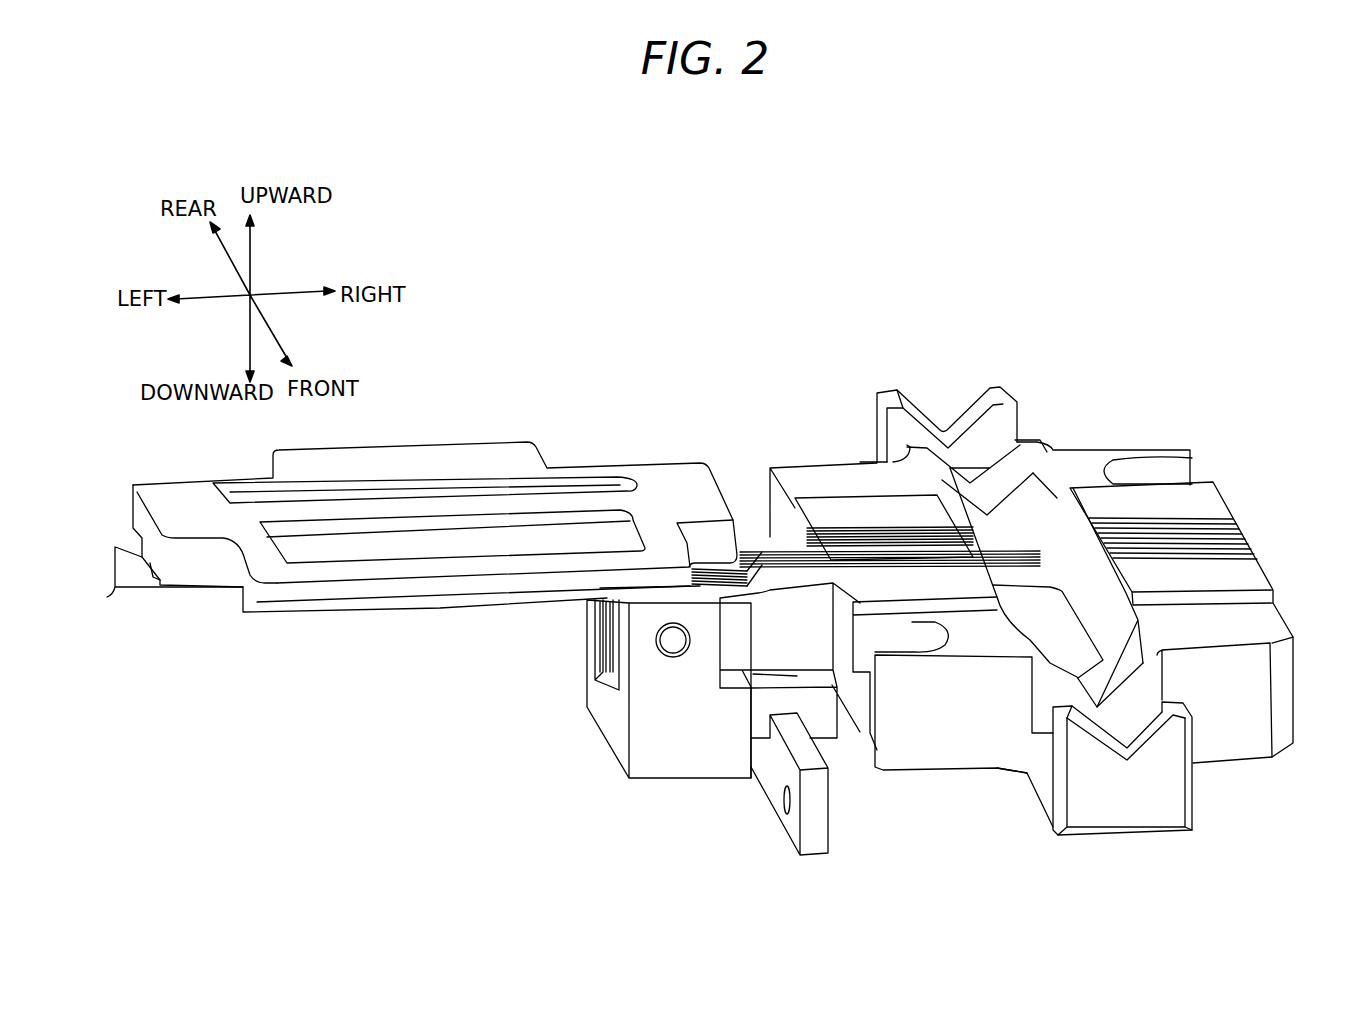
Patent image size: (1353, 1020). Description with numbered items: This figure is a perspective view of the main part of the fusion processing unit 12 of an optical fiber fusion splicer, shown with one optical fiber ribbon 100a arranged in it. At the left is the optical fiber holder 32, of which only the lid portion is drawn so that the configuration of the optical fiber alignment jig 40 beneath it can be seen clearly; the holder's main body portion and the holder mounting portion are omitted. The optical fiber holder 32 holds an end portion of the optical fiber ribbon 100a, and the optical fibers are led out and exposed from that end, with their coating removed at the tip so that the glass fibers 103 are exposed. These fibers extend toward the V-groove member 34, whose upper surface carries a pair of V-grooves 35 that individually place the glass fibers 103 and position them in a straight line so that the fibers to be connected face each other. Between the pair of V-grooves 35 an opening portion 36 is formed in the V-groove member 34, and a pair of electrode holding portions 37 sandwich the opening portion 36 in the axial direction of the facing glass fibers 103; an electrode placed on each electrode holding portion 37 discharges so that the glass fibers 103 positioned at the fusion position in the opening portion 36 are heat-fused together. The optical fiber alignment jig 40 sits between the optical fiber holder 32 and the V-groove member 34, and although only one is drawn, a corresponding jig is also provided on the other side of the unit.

The fusion processing unit 12 is at (547, 362).
The optical fiber holder 32 is at (662, 480).
The V-groove member 34 is at (928, 772).
The V-groove 35 is at (877, 530).
The opening portion 36 is at (1040, 612).
The electrode holding portion 37 is at (962, 403).
The optical fiber alignment jig 40 is at (740, 798).
The optical fiber ribbon 100a is at (750, 540).
The glass fiber 103 is at (1033, 530).